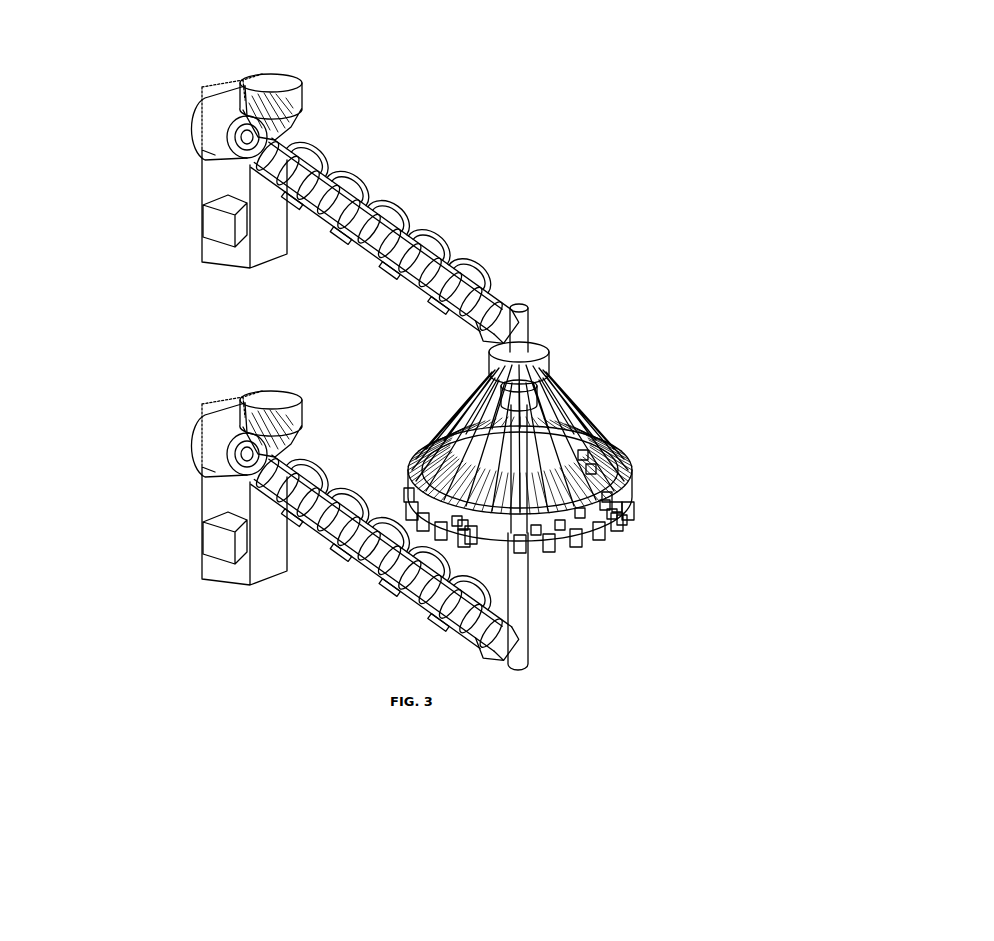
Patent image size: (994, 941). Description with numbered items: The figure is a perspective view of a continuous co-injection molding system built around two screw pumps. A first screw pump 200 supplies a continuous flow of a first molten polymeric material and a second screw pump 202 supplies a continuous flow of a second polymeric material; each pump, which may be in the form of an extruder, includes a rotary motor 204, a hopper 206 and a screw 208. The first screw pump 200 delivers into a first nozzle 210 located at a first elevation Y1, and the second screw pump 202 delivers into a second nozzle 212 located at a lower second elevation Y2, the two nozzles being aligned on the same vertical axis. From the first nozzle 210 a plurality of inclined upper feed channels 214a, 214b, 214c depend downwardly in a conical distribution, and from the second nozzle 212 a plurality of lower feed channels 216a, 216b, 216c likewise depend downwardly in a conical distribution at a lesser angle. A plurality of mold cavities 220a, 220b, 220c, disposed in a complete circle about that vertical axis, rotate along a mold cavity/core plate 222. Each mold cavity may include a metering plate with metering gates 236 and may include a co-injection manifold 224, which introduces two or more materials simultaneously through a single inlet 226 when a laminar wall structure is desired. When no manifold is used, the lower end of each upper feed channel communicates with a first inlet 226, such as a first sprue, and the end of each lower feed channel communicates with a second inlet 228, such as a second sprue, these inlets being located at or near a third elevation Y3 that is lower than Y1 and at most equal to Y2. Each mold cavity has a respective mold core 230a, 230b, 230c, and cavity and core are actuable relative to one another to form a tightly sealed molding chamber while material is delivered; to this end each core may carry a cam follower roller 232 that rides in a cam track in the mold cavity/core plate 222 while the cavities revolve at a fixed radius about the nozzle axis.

The first screw pump 200 is at (414, 121).
The second screw pump 202 is at (255, 621).
The rotary motor 204 is at (214, 448).
The hopper 206 is at (285, 398).
The screw 208 is at (343, 548).
The first nozzle 210 is at (537, 350).
The second nozzle 212 is at (515, 400).
The inclined upper feed channel 214a is at (580, 513).
The inclined upper feed channel 214b is at (608, 505).
The inclined upper feed channel 214c is at (585, 457).
The lower feed channel 216a is at (536, 530).
The lower feed channel 216b is at (612, 510).
The lower feed channel 216c is at (590, 470).
The mold cavity 220a is at (560, 525).
The mold cavity 220b is at (618, 516).
The mold cavity 220c is at (618, 508).
The mold cavity/core plate 222 is at (517, 523).
The co-injection manifold 224 is at (354, 633).
The first inlet 226 is at (463, 526).
The second inlet 228 is at (468, 531).
The mold core 230a is at (548, 535).
The mold core 230b is at (626, 521).
The mold core 230c is at (608, 498).
The cam follower roller 232 is at (507, 545).
The metering gate 236 is at (457, 522).
The first elevation Y1 is at (44, 512).
The second elevation Y2 is at (44, 409).
The third elevation Y3 is at (44, 512).